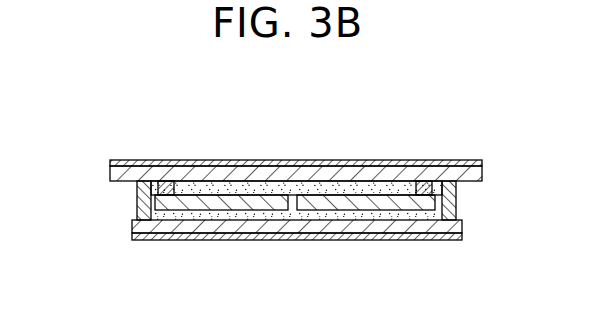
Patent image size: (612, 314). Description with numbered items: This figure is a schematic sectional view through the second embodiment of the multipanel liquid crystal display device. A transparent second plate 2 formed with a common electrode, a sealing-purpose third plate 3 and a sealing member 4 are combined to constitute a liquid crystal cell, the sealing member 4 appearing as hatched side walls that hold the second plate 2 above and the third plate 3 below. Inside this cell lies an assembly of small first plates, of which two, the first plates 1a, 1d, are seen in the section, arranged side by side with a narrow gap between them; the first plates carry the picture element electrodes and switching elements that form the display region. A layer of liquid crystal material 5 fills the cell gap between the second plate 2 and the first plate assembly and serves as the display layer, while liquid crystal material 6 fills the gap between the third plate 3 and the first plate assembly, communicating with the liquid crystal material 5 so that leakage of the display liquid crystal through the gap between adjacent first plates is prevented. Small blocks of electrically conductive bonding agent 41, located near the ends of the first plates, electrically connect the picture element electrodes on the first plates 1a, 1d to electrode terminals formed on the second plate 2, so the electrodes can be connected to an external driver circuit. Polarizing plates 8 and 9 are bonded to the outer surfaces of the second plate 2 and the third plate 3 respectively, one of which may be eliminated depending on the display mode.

The polarizing plate 8 is at (118, 160).
The second plate 2 is at (110, 176).
The sealing member 4 is at (137, 207).
The electrically conductive bonding agent 41 is at (168, 192).
The liquid crystal material 5 is at (333, 186).
The first plate 1a is at (220, 206).
The first plate 1d is at (365, 207).
The liquid crystal material 6 is at (298, 213).
The third plate 3 is at (132, 223).
The polarizing plate 9 is at (140, 240).